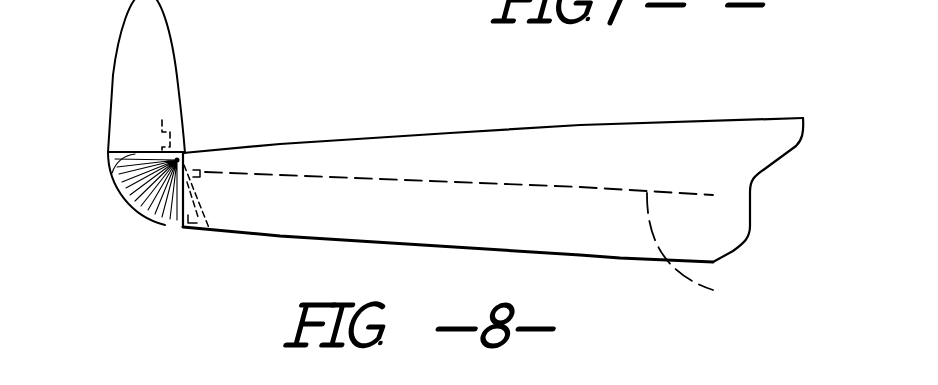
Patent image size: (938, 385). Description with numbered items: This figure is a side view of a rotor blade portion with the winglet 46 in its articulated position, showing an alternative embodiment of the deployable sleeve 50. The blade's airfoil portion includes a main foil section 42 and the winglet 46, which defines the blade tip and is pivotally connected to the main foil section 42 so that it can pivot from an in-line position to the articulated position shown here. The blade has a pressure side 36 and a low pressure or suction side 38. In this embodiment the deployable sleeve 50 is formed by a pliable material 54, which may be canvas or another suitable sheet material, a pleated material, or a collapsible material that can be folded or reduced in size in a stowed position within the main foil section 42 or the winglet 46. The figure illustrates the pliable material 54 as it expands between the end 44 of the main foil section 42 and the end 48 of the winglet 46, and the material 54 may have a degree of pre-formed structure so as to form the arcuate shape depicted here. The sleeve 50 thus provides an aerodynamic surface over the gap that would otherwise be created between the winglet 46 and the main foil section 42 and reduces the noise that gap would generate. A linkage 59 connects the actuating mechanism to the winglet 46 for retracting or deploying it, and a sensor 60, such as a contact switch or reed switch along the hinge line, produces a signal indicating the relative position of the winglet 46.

The pressure side 36 is at (630, 120).
The suction side 38 is at (568, 262).
The main foil section 42 is at (513, 138).
The end of the main foil section 44 is at (185, 193).
The winglet 46 is at (132, 72).
The end of the winglet 48 is at (115, 178).
The deployable sleeve 50 is at (124, 216).
The pliable material 54 is at (160, 222).
The linkage 59 is at (702, 252).
The sensor 60 is at (162, 120).